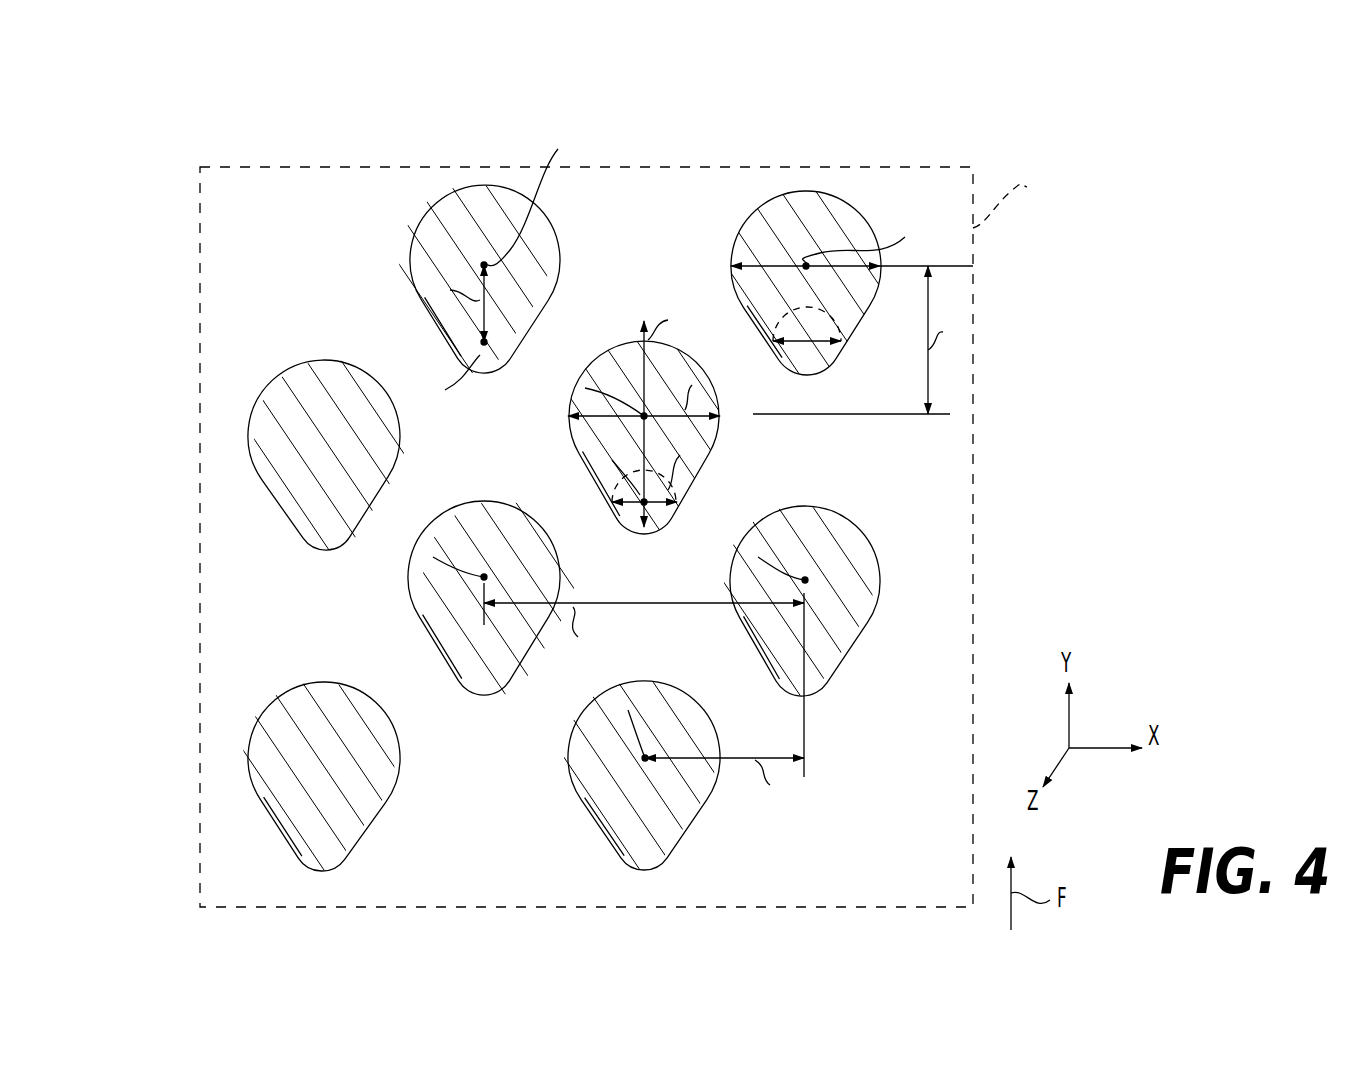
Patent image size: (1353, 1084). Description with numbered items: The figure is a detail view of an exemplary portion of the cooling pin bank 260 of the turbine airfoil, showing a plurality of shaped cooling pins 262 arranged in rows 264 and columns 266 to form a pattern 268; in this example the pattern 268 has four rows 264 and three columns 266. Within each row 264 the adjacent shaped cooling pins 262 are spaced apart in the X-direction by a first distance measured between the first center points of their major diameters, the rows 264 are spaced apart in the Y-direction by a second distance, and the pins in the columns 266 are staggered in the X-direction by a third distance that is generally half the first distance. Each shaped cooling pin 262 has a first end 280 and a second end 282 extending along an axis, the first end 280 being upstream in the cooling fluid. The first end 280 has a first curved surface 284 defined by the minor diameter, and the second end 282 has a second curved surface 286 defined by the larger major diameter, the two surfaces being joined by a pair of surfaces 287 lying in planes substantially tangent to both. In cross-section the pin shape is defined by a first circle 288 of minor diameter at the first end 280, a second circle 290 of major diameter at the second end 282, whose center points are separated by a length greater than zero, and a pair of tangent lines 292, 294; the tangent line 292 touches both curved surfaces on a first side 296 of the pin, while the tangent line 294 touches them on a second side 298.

The cooling pin bank 260 is at (1150, 140).
The shaped cooling pin 262 is at (676, 531).
The rows 264 is at (370, 250).
The columns 266 is at (543, 134).
The pattern 268 is at (1021, 199).
The first end 280 is at (288, 545).
The second end 282 is at (276, 362).
The first curved surface 284 is at (500, 366).
The second curved surface 286 is at (470, 185).
The pair of surfaces 287 is at (424, 318).
The first circle 288 is at (604, 487).
The second circle 290 is at (698, 495).
The tangent line 292 is at (560, 473).
The tangent line 294 is at (703, 477).
The first side 296 is at (553, 433).
The second side 298 is at (790, 450).